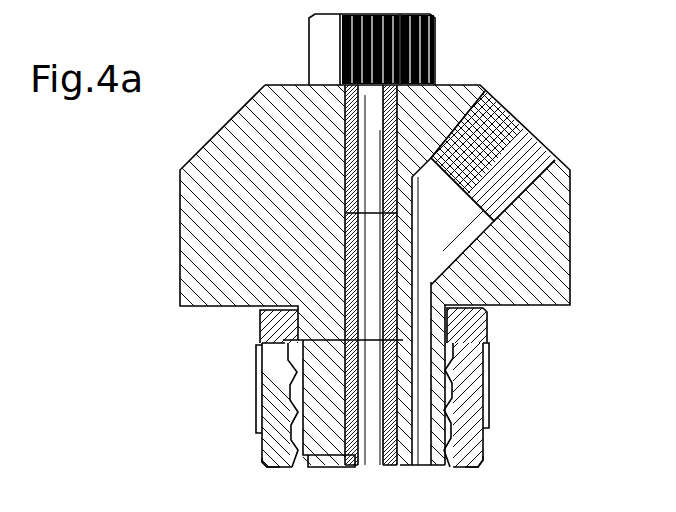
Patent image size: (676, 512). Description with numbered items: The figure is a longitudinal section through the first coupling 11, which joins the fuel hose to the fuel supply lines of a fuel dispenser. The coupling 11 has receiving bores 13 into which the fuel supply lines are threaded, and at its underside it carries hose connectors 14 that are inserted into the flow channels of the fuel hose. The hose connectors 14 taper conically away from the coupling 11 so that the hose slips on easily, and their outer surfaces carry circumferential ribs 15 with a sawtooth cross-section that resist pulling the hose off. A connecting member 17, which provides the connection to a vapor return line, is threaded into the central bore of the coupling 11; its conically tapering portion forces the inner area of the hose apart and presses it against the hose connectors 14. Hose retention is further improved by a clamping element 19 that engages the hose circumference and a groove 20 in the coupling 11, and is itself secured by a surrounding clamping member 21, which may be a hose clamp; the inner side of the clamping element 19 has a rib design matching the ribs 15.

The first coupling 11 is at (553, 218).
The receiving bore 13 is at (545, 168).
The hose connector 14 is at (427, 438).
The circumferential rib 15 is at (453, 382).
The connecting member 17 is at (434, 83).
The clamping element 19 is at (472, 460).
The groove 20 is at (483, 317).
The clamping member 21 is at (488, 402).